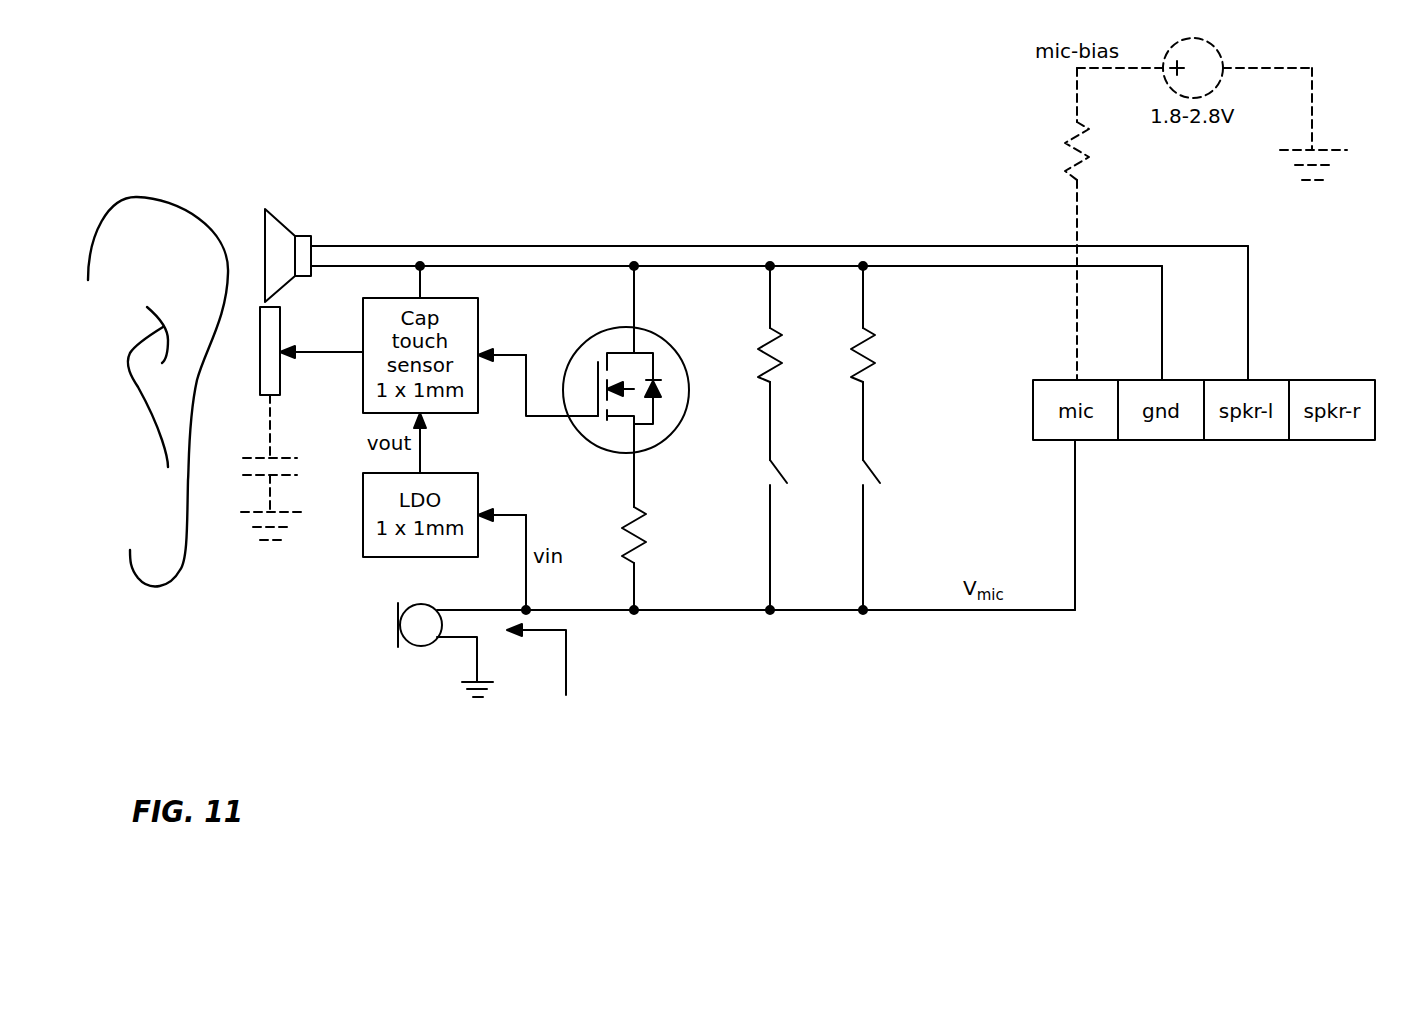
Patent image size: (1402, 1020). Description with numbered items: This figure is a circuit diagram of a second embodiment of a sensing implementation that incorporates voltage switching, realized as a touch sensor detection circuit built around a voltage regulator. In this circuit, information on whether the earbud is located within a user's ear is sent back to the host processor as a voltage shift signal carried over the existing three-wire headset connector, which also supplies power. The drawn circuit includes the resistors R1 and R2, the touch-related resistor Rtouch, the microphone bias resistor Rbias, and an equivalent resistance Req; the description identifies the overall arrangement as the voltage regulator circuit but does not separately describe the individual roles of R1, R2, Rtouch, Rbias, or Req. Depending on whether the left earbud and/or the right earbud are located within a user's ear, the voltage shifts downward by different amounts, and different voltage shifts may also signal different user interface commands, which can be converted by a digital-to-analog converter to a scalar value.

The resistor R1 is at (878, 438).
The resistor R2 is at (785, 438).
The touch resistor Rtouch is at (668, 560).
The microphone bias resistor Rbias is at (1043, 224).
The equivalent resistance 2K ohms Req is at (606, 676).